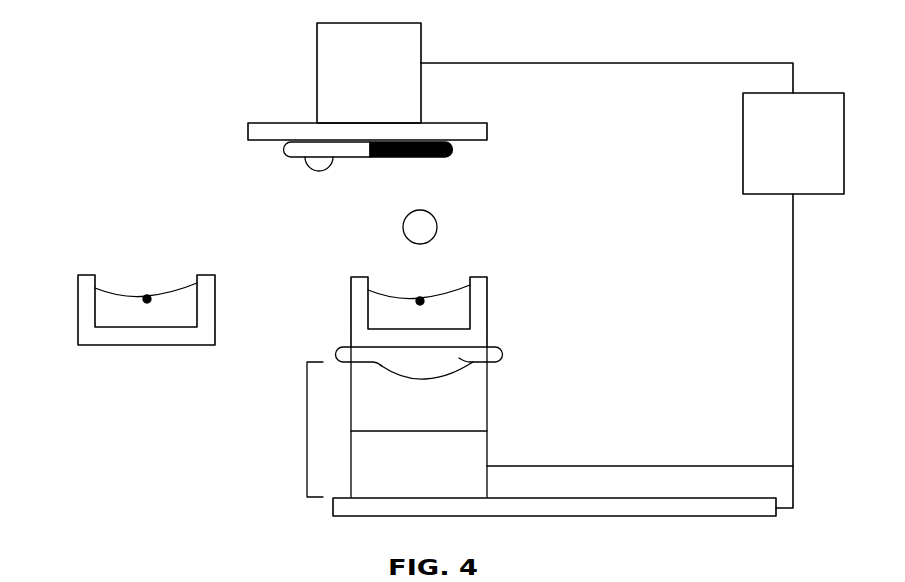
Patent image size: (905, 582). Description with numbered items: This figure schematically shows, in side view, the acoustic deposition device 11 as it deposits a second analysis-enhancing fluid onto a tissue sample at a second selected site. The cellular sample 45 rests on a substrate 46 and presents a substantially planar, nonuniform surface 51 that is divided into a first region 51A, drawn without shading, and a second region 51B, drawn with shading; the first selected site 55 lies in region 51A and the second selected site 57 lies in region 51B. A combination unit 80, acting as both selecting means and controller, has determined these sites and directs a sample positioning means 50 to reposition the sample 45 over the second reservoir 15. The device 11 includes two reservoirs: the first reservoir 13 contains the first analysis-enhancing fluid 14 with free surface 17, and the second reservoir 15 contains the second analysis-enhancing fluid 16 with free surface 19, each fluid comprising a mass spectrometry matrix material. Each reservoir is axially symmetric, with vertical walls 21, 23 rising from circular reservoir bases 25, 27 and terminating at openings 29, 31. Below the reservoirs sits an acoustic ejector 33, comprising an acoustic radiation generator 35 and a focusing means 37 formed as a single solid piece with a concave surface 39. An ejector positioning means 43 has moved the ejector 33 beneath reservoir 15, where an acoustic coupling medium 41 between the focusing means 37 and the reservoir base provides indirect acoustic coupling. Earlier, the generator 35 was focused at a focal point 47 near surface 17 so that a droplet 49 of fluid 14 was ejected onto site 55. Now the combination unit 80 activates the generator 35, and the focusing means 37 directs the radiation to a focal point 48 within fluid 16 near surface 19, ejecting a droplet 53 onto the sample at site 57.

The device 11 is at (643, 352).
The first reservoir 13 is at (82, 307).
The first analysis-enhancing fluid 14 is at (186, 310).
The second reservoir 15 is at (480, 320).
The second analysis-enhancing fluid 16 is at (378, 318).
The free surface of first fluid 17 is at (185, 283).
The free surface of second fluid 19 is at (458, 283).
The vertical wall of first reservoir 21 is at (113, 290).
The vertical wall of second reservoir 23 is at (378, 296).
The reservoir base of first reservoir 25 is at (145, 345).
The reservoir base of second reservoir 27 is at (495, 353).
The opening of first reservoir 29 is at (86, 275).
The opening of second reservoir 31 is at (358, 276).
The acoustic ejector 33 is at (307, 431).
The acoustic radiation generator 35 is at (487, 450).
The focusing means 37 is at (487, 408).
The concave surface 39 is at (343, 353).
The acoustic coupling medium 41 is at (423, 363).
The ejector positioning means 43 is at (335, 506).
The cellular sample 45 is at (455, 150).
The substrate 46 is at (467, 123).
The focal point 47 is at (148, 295).
The focal point 48 is at (420, 297).
The droplet 49 is at (322, 160).
The sample positioning means 50 is at (421, 51).
The surface 51 is at (368, 159).
The first region 51A is at (297, 158).
The second region 51B is at (421, 159).
The droplet 53 is at (437, 227).
The first selected site 55 is at (308, 156).
The second selected site 57 is at (436, 148).
The combination unit 80 is at (818, 93).